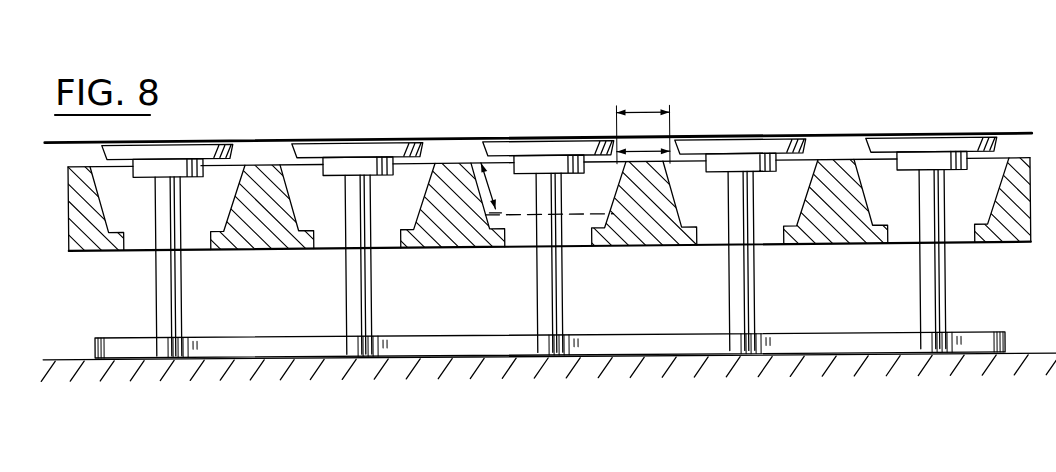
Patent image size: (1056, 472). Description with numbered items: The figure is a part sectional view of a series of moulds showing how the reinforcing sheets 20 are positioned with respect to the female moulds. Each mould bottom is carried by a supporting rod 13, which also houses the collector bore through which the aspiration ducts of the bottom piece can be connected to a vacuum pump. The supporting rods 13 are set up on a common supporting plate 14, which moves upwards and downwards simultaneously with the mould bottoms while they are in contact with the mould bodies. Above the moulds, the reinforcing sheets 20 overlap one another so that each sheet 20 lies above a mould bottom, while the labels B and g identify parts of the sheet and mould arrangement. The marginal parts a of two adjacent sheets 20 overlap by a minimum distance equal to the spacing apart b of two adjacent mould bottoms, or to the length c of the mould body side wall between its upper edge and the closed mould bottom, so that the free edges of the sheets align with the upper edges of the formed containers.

The supporting rod 13 is at (553, 304).
The supporting plate 14 is at (637, 342).
The reinforcing sheet 20 is at (742, 141).
The cap plate B is at (506, 153).
The block partition g is at (633, 190).
The marginal part a is at (643, 126).
The spacing apart of two adjacent bottoms of moulds b is at (648, 158).
The length of the side wall of the body of the mould c is at (547, 188).